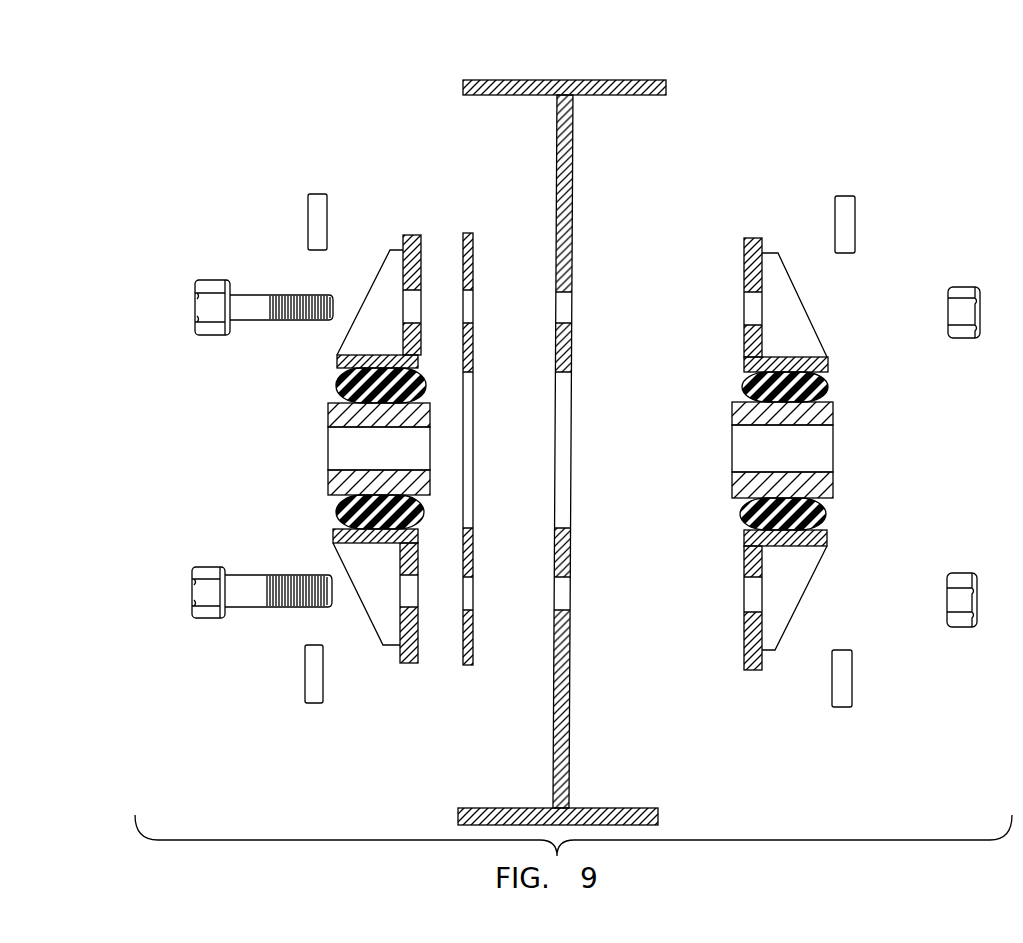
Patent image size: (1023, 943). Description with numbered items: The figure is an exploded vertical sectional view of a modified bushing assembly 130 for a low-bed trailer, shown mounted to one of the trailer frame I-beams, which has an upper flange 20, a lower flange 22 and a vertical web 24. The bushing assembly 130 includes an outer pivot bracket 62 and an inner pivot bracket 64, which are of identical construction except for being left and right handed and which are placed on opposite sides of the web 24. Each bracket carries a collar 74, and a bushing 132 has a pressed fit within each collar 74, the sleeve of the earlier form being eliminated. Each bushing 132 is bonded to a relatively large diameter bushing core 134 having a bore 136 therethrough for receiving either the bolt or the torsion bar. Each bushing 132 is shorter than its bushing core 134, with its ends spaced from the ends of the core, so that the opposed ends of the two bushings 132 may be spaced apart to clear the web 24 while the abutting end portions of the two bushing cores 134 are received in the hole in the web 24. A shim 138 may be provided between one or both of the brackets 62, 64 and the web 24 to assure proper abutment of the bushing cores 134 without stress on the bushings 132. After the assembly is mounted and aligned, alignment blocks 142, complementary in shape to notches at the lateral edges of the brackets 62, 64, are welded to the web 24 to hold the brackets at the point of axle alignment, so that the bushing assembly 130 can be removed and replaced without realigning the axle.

The upper flange 20 is at (603, 80).
The web 24 is at (573, 128).
The lower flange 22 is at (606, 808).
The bushing assembly 130 is at (563, 427).
The shim 138 is at (472, 233).
The inner pivot bracket 64 is at (378, 268).
The outer pivot bracket 62 is at (832, 541).
The collar 74 is at (333, 535).
The bushing 132 is at (338, 386).
The bushing core 134 is at (330, 415).
The bore 136 is at (330, 451).
The alignment block 142 is at (308, 226).